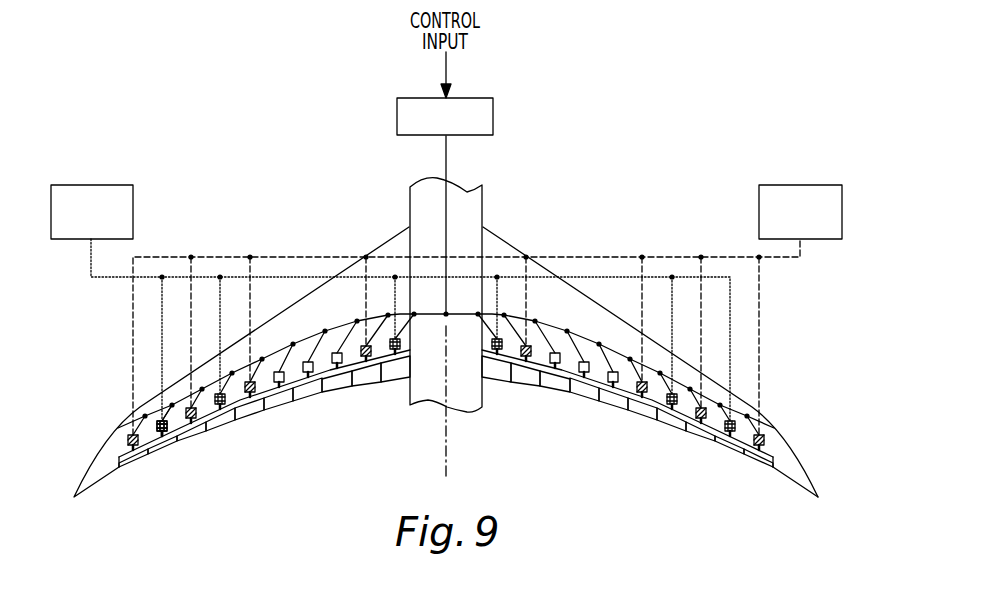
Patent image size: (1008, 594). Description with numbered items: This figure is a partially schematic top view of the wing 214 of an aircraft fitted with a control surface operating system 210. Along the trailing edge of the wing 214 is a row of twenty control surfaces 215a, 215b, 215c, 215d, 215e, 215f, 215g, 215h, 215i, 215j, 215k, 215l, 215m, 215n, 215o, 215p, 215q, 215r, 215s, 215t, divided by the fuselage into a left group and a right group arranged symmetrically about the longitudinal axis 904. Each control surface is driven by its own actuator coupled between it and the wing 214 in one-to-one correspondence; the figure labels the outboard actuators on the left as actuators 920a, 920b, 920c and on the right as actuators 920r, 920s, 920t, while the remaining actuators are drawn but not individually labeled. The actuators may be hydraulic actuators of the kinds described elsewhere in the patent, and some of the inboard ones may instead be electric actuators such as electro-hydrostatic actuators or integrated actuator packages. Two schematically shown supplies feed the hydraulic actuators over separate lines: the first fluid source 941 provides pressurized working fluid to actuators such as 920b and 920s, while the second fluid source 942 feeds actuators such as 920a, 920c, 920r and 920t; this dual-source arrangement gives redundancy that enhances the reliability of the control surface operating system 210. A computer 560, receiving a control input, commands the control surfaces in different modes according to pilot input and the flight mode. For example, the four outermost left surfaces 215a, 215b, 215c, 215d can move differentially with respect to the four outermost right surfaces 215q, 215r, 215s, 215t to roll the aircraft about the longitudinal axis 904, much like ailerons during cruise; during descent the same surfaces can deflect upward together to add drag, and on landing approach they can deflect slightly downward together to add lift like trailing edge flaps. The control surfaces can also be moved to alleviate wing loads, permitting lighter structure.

The control surface operating system 210 is at (283, 172).
The wing 214 is at (592, 302).
The computer 560 is at (478, 98).
The longitudinal axis 904 is at (448, 438).
The first fluid source 941 is at (113, 185).
The second fluid source 942 is at (781, 185).
The actuator 920a is at (128, 444).
The actuator 920b is at (157, 432).
The actuator 920c is at (186, 420).
The actuator 920r is at (706, 420).
The actuator 920s is at (735, 432).
The actuator 920t is at (764, 445).
The control surface 215a is at (130, 466).
The control surface 215b is at (163, 447).
The control surface 215c is at (192, 440).
The control surface 215d is at (220, 426).
The control surface 215e is at (250, 410).
The control surface 215f is at (279, 400).
The control surface 215g is at (308, 392).
The control surface 215h is at (338, 384).
The control surface 215i is at (366, 378).
The control surface 215j is at (396, 374).
The control surface 215k is at (496, 374).
The control surface 215l is at (526, 378).
The control surface 215m is at (556, 386).
The control surface 215n is at (585, 394).
The control surface 215o is at (615, 402).
The control surface 215p is at (644, 412).
The control surface 215q is at (673, 422).
The control surface 215r is at (701, 434).
The control surface 215s is at (730, 446).
The control surface 215t is at (759, 460).